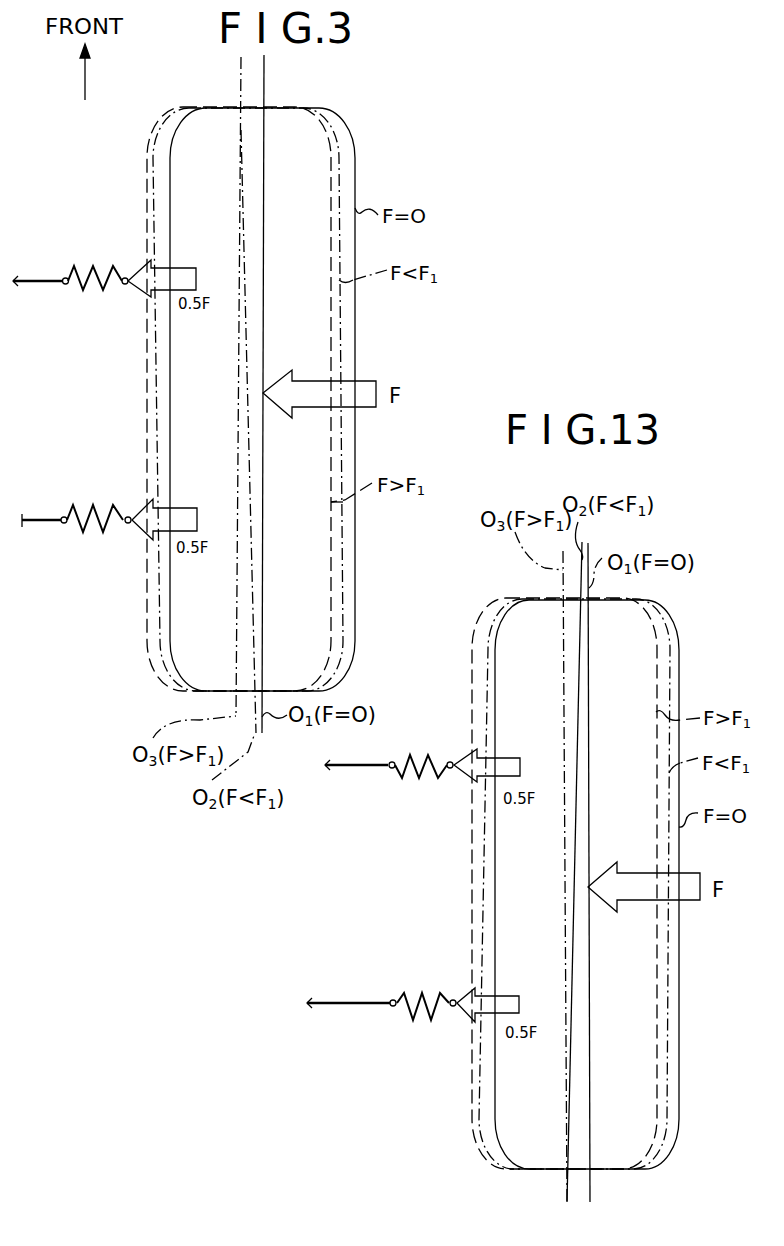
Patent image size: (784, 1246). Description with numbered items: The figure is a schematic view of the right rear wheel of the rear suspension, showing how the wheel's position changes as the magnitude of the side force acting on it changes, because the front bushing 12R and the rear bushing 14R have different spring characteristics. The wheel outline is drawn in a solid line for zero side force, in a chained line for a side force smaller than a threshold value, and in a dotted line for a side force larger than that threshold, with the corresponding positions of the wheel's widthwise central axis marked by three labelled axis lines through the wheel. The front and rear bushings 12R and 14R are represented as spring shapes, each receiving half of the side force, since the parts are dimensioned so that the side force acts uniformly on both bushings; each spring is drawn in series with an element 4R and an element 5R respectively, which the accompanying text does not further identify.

In FIG. 3, the right damper (lead) 4R is at (42, 280).
In FIG. 13, the right damper (lead) 4R is at (368, 768).
In FIG. 3, the front bushing 12R is at (95, 272).
In FIG. 13, the front bushing 12R is at (432, 758).
In FIG. 3, the right damper (lead) 5R is at (47, 525).
In FIG. 13, the right damper (lead) 5R is at (340, 1007).
In FIG. 3, the rear bushing 14R is at (107, 532).
In FIG. 13, the rear bushing 14R is at (417, 1020).